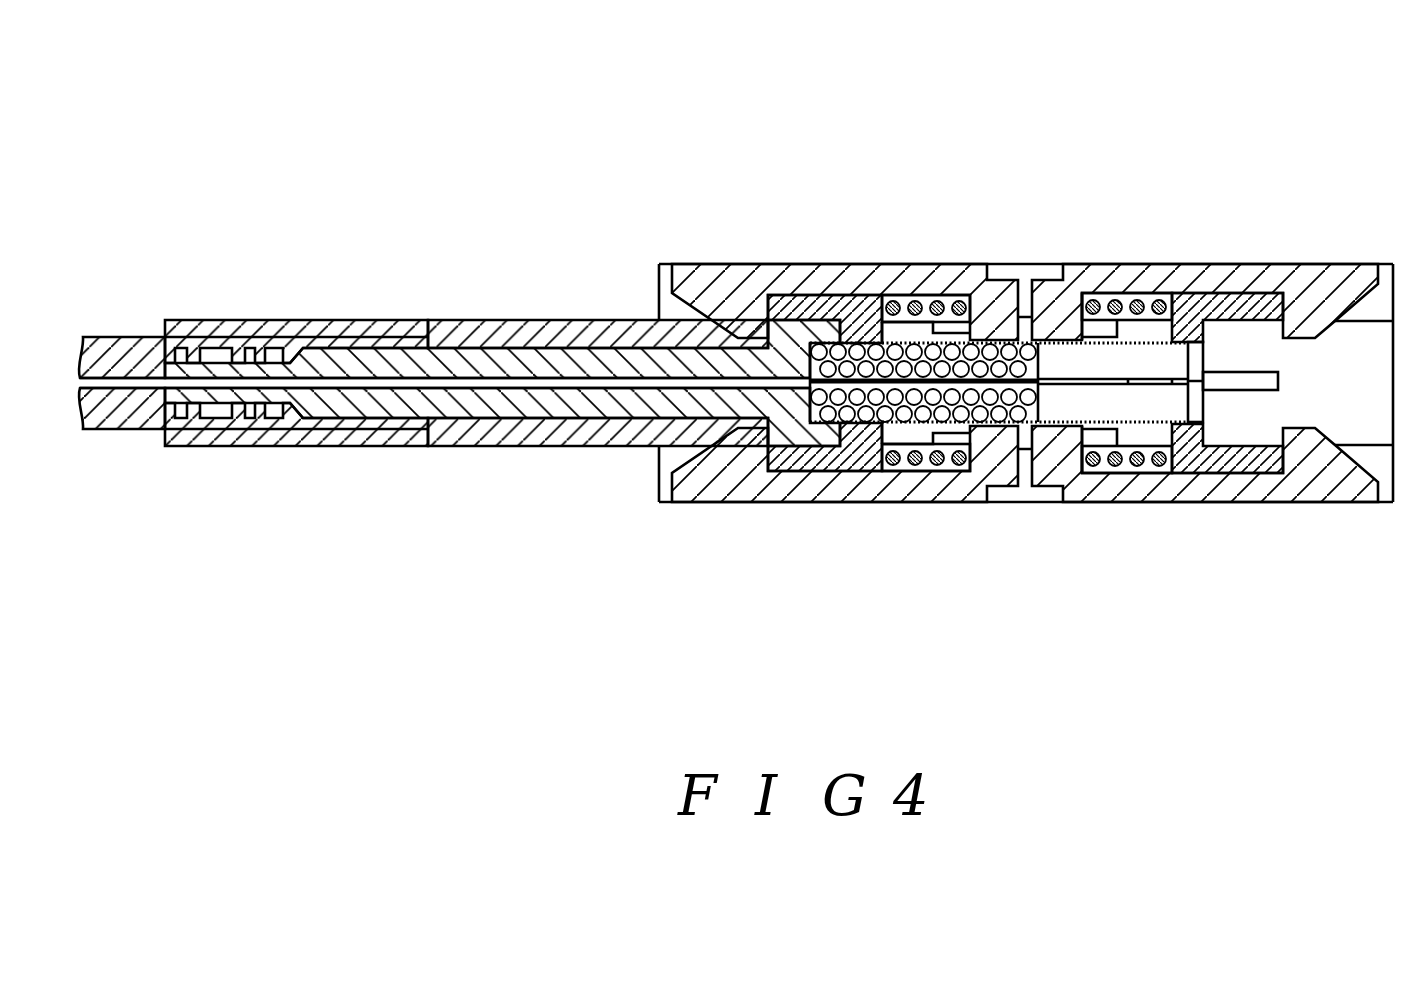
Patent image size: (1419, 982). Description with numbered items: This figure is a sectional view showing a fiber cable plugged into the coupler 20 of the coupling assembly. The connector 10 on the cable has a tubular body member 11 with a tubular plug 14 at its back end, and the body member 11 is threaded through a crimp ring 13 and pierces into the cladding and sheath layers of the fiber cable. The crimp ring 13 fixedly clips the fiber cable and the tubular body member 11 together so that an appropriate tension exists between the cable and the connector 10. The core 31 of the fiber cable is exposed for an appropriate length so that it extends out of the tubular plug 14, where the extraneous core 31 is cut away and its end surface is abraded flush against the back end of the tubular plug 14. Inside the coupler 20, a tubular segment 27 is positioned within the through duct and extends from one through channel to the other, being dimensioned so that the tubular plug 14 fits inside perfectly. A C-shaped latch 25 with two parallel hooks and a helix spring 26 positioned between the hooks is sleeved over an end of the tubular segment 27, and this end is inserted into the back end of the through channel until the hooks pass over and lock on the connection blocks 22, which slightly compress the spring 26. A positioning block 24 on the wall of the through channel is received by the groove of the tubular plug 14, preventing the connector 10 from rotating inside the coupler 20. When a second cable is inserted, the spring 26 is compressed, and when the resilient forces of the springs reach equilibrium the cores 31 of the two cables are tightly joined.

The connector 10 is at (470, 257).
The tubular body member 11 is at (655, 360).
The crimp ring 13 is at (335, 448).
The tubular plug 14 is at (575, 445).
The coupler 20 is at (952, 202).
The connection blocks 22 is at (812, 300).
The positioning block 24 is at (1230, 373).
The C-shaped latch 25 is at (1225, 483).
The helix spring 26 is at (1105, 288).
The tubular segment 27 is at (1093, 453).
The core 31 is at (953, 420).